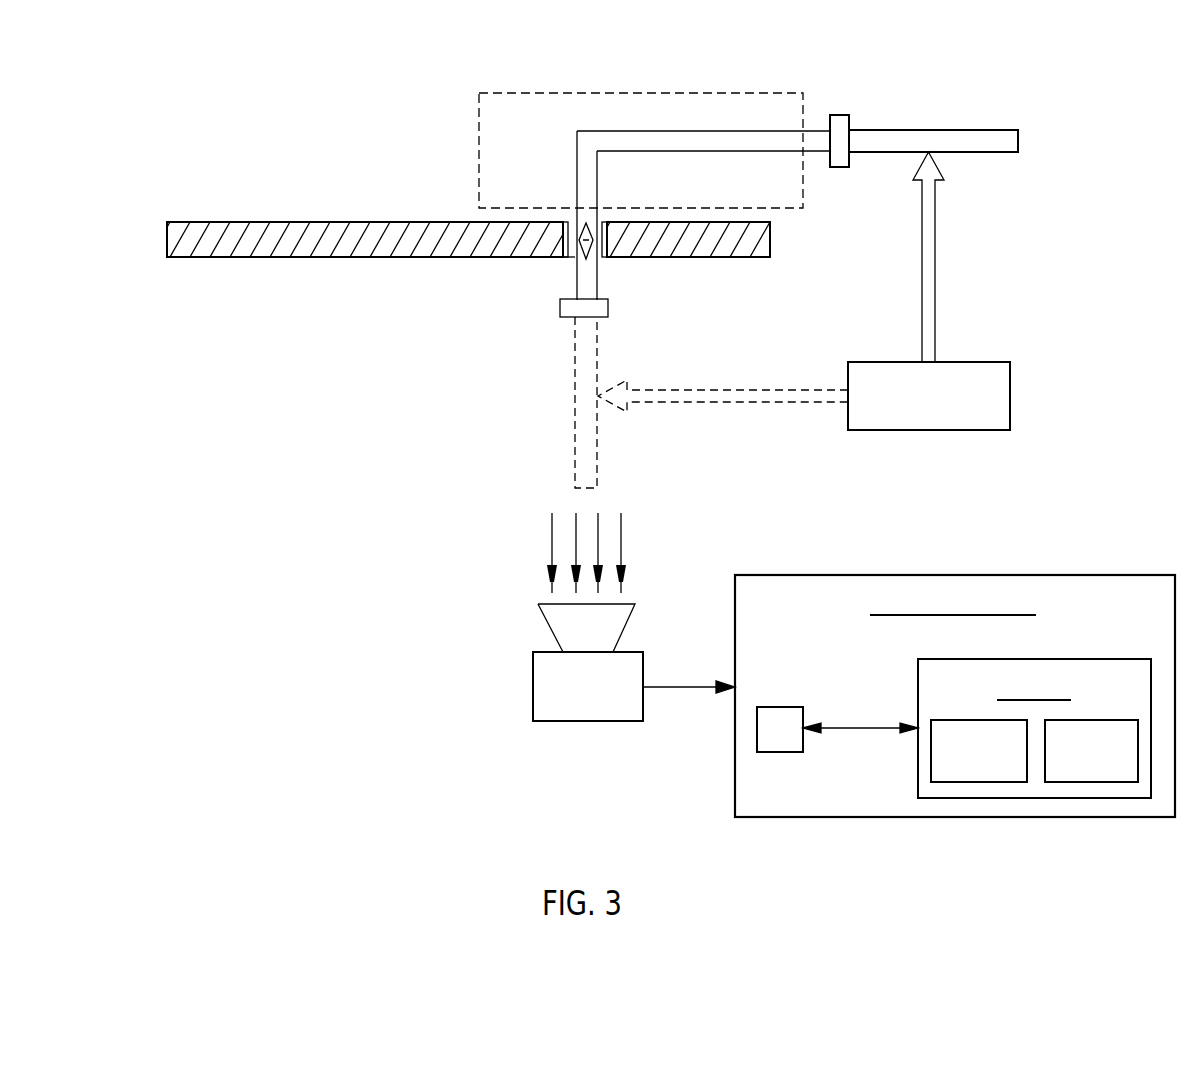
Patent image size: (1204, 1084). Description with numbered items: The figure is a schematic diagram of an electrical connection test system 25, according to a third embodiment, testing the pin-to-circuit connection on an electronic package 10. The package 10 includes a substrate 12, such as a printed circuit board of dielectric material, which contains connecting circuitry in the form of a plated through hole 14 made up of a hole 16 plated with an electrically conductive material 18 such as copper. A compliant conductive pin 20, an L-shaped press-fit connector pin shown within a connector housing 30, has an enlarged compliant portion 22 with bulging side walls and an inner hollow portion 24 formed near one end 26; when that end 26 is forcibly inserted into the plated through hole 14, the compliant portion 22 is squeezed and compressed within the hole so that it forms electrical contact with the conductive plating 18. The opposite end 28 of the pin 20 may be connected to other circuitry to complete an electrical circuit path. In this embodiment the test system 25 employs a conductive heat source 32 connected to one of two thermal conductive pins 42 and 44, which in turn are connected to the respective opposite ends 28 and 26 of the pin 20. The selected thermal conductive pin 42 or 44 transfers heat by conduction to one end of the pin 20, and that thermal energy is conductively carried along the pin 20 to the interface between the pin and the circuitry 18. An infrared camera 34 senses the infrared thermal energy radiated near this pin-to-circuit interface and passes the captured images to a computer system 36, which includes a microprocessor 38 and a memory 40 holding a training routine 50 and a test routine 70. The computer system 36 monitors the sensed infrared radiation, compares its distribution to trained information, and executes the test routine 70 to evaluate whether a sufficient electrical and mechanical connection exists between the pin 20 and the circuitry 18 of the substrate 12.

The electronic package 10 is at (368, 42).
The substrate 12 is at (770, 240).
The plated through hole 14 is at (618, 272).
The hole 16 is at (570, 222).
The electrically conductive material 18 is at (566, 259).
The compliant conductive pin 20 is at (622, 137).
The enlarged compliant portion 22 is at (589, 238).
The inner hollow portion 24 is at (608, 225).
The electrical connection test system 25 is at (456, 436).
The end of pin 26 is at (583, 285).
The end of pin 28 is at (818, 125).
The connector housing 30 is at (737, 92).
The conductive heat source 32 is at (997, 362).
The infrared camera 34 is at (628, 647).
The computer system 36 is at (1125, 575).
The microprocessor 38 is at (790, 707).
The memory 40 is at (1120, 659).
The thermal conductive pin 42 is at (1000, 130).
The thermal conductive pin 44 is at (575, 413).
The training routine 50 is at (981, 720).
The test routine 70 is at (1095, 720).